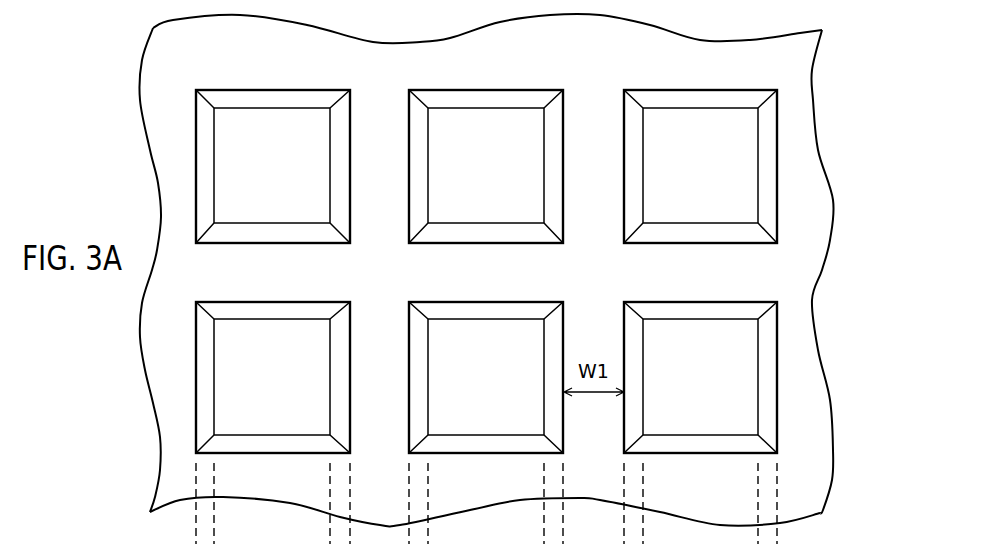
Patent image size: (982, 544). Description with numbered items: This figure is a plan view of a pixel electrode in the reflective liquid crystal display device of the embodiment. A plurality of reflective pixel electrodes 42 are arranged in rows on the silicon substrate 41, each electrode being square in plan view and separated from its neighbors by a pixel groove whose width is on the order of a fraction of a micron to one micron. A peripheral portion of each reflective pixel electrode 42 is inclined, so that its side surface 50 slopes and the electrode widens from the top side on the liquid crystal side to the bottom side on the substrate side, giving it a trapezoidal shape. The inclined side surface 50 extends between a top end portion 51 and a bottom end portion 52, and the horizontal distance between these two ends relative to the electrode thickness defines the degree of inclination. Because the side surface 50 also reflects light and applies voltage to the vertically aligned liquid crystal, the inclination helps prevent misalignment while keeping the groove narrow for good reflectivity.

The silicon substrate 41 is at (793, 77).
The reflective pixel electrode 42 is at (727, 155).
The side surface 50 is at (767, 378).
The top end portion 51 is at (759, 347).
The bottom end portion 52 is at (780, 407).